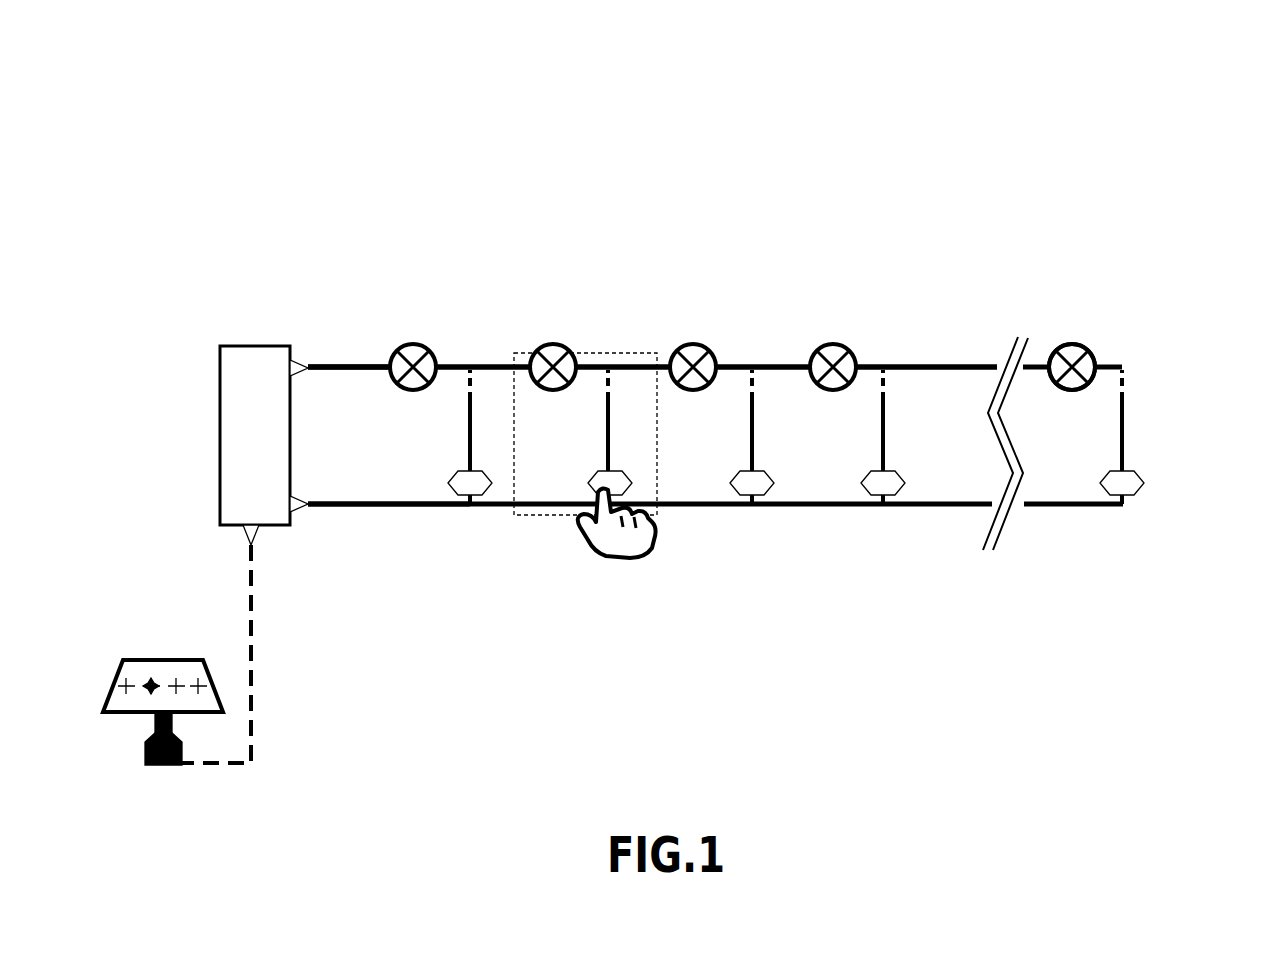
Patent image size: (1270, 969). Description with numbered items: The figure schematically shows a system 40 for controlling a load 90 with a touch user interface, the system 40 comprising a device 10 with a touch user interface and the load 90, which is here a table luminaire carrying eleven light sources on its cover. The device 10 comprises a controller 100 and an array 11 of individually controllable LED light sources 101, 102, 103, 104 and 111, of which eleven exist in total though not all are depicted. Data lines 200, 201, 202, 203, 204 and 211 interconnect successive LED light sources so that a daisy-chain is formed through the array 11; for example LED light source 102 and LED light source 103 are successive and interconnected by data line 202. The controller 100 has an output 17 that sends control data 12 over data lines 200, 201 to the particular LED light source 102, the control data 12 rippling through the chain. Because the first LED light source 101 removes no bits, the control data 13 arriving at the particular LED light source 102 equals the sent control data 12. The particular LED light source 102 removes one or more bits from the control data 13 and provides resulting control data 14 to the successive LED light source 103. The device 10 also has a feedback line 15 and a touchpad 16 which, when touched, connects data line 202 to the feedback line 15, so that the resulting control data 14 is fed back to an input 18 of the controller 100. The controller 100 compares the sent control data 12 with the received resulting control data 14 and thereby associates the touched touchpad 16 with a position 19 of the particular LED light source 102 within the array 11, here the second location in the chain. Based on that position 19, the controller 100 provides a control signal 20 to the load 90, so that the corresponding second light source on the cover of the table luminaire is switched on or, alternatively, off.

The system 40 is at (527, 120).
The device 10 is at (623, 209).
The array 11 is at (1127, 240).
The controller 100 is at (255, 360).
The control data 12 is at (345, 352).
The data line 200 is at (367, 382).
The LED light source 101 is at (413, 322).
The LED light source 102 is at (553, 322).
The LED light source 103 is at (692, 322).
The LED light source 104 is at (831, 322).
The LED light source 111 is at (1070, 322).
The data line 201 is at (482, 354).
The data line 202 is at (622, 354).
The data line 203 is at (768, 354).
The data line 204 is at (906, 354).
The data line 211 is at (1118, 354).
The control data 13 is at (447, 389).
The resulting control data 14 is at (384, 524).
The feedback line 15 is at (505, 522).
The touchpad 16 is at (574, 483).
The output 17 is at (300, 391).
The input 18 is at (301, 522).
The position 19 is at (672, 482).
The control signal 20 is at (266, 678).
The load 90 is at (185, 645).